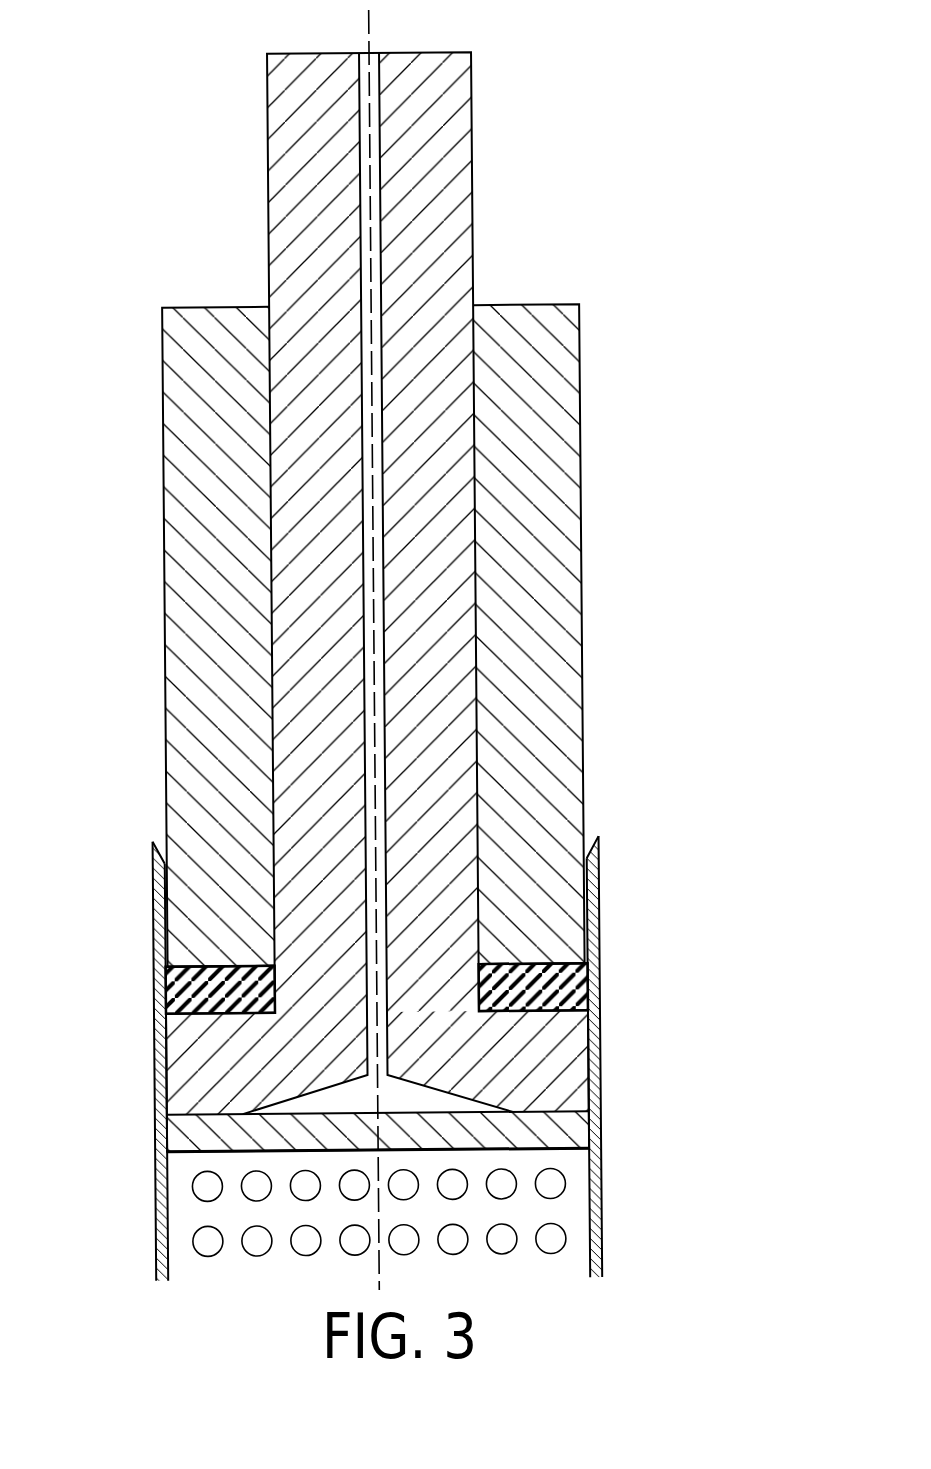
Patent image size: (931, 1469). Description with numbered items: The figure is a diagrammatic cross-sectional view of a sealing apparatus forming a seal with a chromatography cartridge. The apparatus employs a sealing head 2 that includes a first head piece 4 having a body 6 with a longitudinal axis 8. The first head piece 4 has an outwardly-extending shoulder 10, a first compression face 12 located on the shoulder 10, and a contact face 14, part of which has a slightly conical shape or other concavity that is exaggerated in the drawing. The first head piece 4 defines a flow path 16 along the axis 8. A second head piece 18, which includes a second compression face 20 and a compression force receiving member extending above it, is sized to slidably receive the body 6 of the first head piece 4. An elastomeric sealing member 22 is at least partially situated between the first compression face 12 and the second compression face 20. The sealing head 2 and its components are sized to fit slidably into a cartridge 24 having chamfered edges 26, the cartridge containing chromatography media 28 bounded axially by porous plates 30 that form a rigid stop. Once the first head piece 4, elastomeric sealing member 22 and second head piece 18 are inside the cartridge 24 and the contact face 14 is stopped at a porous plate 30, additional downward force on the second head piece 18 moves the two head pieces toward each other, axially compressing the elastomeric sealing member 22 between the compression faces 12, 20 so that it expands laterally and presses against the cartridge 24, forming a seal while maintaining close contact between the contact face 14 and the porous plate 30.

The sealing head 2 is at (134, 199).
The first head piece 4 is at (470, 389).
The body 6 is at (445, 576).
The longitudinal axis 8 is at (358, 10).
The outwardly-extending shoulder 10 is at (179, 1060).
The first compression face 12 is at (157, 1006).
The contact face 14 is at (214, 1114).
The flow path 16 is at (381, 138).
The second head piece 18 is at (546, 496).
The second compression face 20 is at (204, 964).
The elastomeric sealing member 22 is at (169, 986).
The cartridge 24 is at (150, 1221).
The chamfered edges 26 is at (143, 850).
The chromatography media 28 is at (542, 1239).
The porous plates 30 is at (556, 1129).